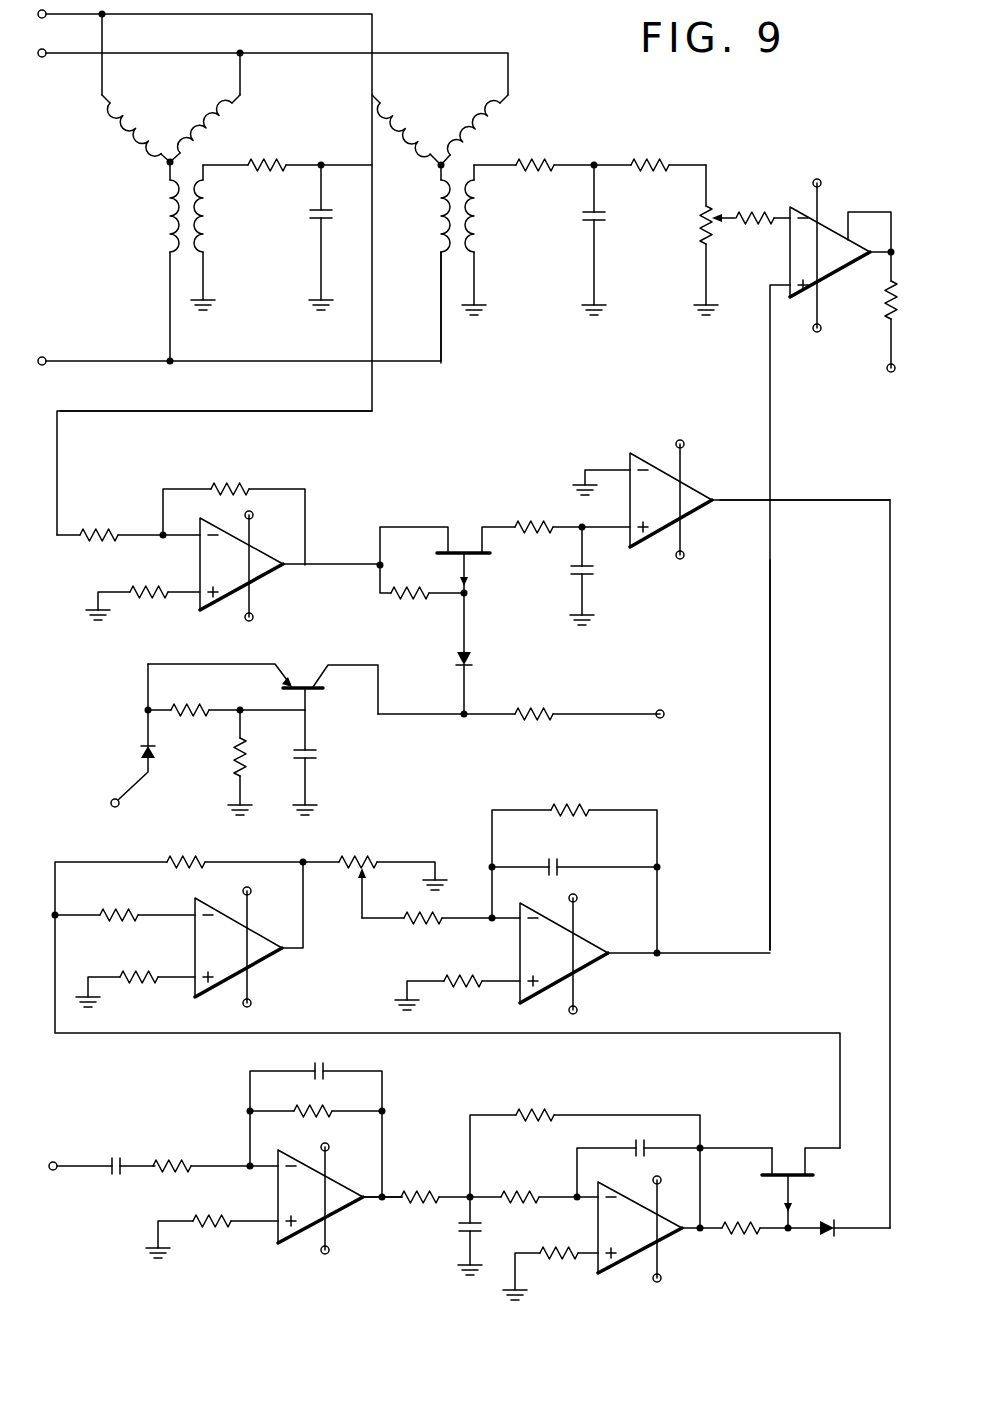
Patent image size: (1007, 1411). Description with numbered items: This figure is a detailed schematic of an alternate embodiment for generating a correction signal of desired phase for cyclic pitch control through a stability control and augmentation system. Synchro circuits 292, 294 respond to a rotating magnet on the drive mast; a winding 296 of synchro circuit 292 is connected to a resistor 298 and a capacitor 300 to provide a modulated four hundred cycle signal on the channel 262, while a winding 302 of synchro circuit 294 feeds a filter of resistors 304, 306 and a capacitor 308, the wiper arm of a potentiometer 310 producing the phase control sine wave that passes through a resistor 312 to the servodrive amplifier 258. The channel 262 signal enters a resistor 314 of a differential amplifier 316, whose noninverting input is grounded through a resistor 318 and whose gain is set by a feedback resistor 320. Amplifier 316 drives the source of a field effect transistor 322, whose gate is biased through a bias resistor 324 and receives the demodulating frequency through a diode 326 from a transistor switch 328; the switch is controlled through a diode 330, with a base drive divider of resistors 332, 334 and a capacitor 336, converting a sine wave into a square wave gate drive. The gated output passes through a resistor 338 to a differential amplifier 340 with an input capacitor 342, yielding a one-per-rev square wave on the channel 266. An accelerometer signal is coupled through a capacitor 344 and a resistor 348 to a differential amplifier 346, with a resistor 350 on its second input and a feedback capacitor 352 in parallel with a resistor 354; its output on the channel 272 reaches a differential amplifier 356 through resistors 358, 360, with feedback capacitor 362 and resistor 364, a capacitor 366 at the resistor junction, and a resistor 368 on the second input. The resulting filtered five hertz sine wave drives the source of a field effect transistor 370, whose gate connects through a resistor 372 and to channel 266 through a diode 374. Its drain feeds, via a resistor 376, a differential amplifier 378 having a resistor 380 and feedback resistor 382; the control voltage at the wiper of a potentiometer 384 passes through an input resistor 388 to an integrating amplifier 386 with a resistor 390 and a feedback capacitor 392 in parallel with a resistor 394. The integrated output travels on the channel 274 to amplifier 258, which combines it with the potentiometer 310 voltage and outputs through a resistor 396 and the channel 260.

The servodrive amplifier 258 is at (826, 216).
The channel 260 is at (886, 365).
The channel 262 is at (374, 409).
The channel 266 is at (795, 500).
The channel 272 is at (386, 1194).
The channel 274 is at (772, 661).
The synchro circuit 292 is at (158, 170).
The synchro circuit 294 is at (437, 155).
The winding 296 is at (205, 212).
The resistor 298 is at (270, 160).
The capacitor 300 is at (312, 222).
The winding 302 is at (478, 238).
The resistor 304 is at (537, 160).
The resistor 306 is at (655, 160).
The capacitor 308 is at (600, 222).
The potentiometer 310 is at (712, 206).
The resistor 312 is at (750, 226).
The resistor 314 is at (110, 530).
The differential amplifier 316 is at (258, 576).
The resistor 318 is at (150, 588).
The resistor 320 is at (236, 483).
The field effect transistor 322 is at (466, 545).
The bias resistor 324 is at (412, 600).
The diode 326 is at (472, 660).
The transistor switch 328 is at (306, 672).
The diode 330 is at (140, 748).
The resistor 332 is at (194, 705).
The resistor 334 is at (233, 766).
The capacitor 336 is at (318, 752).
The resistor 338 is at (530, 522).
The differential amplifier 340 is at (690, 497).
The capacitor 342 is at (596, 572).
The capacitor 344 is at (117, 1158).
The differential amplifier 346 is at (344, 1204).
The resistor 348 is at (180, 1160).
The resistor 350 is at (228, 1218).
The capacitor 352 is at (328, 1068).
The resistor 354 is at (323, 1108).
The differential amplifier 356 is at (628, 1240).
The resistor 358 is at (421, 1205).
The resistor 360 is at (530, 1190).
The capacitor 362 is at (634, 1140).
The resistor 364 is at (536, 1108).
The capacitor 366 is at (482, 1228).
The resistor 368 is at (567, 1262).
The field effect transistor 370 is at (790, 1165).
The resistor 372 is at (742, 1240).
The diode 374 is at (826, 1238).
The resistor 376 is at (127, 911).
The differential amplifier 378 is at (260, 957).
The resistor 380 is at (146, 974).
The resistor 382 is at (188, 857).
The potentiometer 384 is at (362, 858).
The integrating amplifier 386 is at (575, 950).
The input resistor 388 is at (428, 925).
The resistor 390 is at (472, 990).
The capacitor 392 is at (560, 866).
The resistor 394 is at (576, 806).
The resistor 396 is at (885, 296).